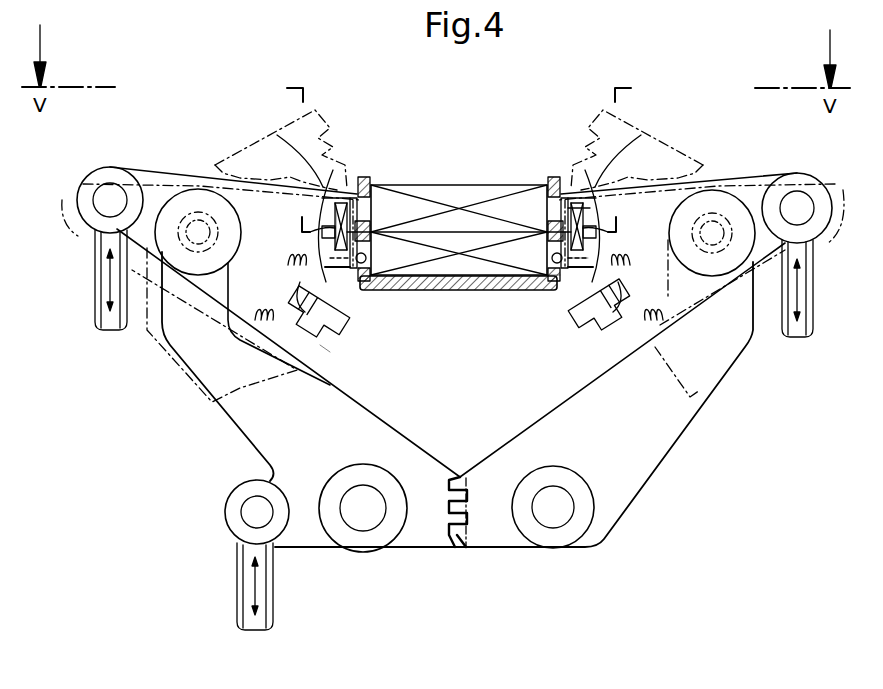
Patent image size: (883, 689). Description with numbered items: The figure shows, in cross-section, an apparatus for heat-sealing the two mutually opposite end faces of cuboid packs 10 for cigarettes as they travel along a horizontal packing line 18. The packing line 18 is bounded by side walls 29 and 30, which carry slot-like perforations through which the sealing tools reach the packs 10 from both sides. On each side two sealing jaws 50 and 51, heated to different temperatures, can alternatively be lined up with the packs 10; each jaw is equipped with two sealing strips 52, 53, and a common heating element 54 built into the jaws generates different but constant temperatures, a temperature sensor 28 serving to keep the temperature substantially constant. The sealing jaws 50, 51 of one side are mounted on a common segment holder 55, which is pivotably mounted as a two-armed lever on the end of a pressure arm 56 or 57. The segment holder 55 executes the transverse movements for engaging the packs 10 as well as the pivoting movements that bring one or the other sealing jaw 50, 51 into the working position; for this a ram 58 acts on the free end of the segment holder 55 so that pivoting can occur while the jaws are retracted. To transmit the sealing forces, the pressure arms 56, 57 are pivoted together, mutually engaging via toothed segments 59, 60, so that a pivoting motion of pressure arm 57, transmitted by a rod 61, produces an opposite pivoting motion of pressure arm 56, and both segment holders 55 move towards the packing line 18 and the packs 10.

The pack 10 is at (446, 188).
The packing line 18 is at (486, 170).
The temperature sensor 28 is at (548, 284).
The side wall 29 is at (366, 181).
The side wall 30 is at (548, 181).
The sealing jaw 50 is at (343, 178).
The sealing jaw 51 is at (348, 341).
The sealing strip 52 is at (355, 300).
The sealing strip 53 is at (330, 350).
The heating element 54 is at (298, 310).
The segment holder 55 is at (163, 180).
The pressure arm 56 is at (645, 442).
The pressure arm 57 is at (238, 408).
The ram 58 is at (97, 318).
The toothed segment 59 is at (454, 543).
The toothed segment 60 is at (468, 548).
The rod 61 is at (263, 585).